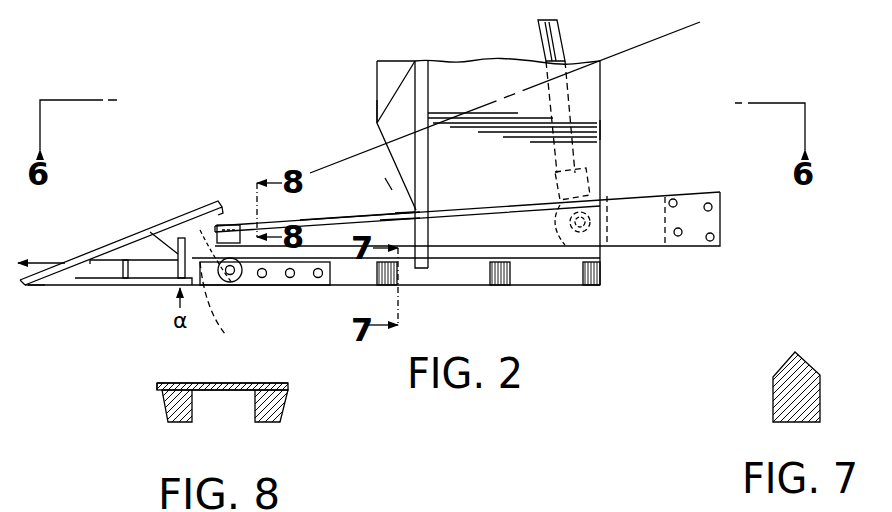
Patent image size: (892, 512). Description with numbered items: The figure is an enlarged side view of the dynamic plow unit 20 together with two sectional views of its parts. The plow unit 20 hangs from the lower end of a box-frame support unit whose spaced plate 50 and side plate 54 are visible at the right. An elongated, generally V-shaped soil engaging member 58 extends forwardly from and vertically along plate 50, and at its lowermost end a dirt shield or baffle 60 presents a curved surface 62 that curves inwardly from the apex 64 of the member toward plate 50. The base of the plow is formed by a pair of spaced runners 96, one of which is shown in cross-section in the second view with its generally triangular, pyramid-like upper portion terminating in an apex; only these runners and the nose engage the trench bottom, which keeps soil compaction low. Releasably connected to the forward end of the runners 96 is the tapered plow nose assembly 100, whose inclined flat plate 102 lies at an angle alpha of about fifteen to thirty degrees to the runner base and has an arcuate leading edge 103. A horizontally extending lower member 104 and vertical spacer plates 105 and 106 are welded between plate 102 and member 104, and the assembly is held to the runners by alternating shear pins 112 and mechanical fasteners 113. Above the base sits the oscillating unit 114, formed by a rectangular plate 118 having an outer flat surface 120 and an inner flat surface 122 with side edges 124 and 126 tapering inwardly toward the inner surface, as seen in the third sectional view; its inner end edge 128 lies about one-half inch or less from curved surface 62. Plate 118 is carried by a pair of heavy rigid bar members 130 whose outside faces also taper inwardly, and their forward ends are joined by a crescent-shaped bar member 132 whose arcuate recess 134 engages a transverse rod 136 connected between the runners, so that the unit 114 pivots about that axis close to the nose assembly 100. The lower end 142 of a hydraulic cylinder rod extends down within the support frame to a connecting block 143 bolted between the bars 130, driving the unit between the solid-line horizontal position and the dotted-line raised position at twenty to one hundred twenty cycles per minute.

In FIG. 2, the dynamic plow unit 20 is at (607, 138).
In FIG. 2, the plate 50 is at (417, 258).
In FIG. 2, the side plate 54 is at (592, 88).
In FIG. 2, the soil engaging member 58 is at (390, 73).
In FIG. 2, the dirt shield or baffle 60 is at (410, 173).
In FIG. 2, the curved surface 62 is at (398, 168).
In FIG. 2, the apex 64 is at (377, 101).
In FIG. 2, the runner 96 is at (583, 282).
In FIG. 7, the runner 96 is at (782, 398).
In FIG. 2, the plow nose assembly 100 is at (104, 238).
In FIG. 2, the inclined flat plate 102 is at (94, 260).
In FIG. 2, the leading edge 103 is at (30, 285).
In FIG. 2, the lower member 104 is at (127, 288).
In FIG. 2, the spacer plate 105 is at (118, 270).
In FIG. 2, the spacer plate 106 is at (162, 240).
In FIG. 2, the shear pin 112 is at (163, 230).
In FIG. 2, the mechanical fastener 113 is at (262, 278).
In FIG. 2, the oscillating unit 114 is at (383, 175).
In FIG. 2, the plate 118 is at (248, 215).
In FIG. 8, the plate 118 is at (208, 381).
In FIG. 2, the outer flat surface 120 is at (364, 210).
In FIG. 8, the outer flat surface 120 is at (260, 383).
In FIG. 2, the inner flat surface 122 is at (400, 222).
In FIG. 8, the inner flat surface 122 is at (217, 393).
In FIG. 8, the side edge 124 is at (288, 390).
In FIG. 8, the side edge 126 is at (157, 387).
In FIG. 2, the inner end edge 128 is at (408, 212).
In FIG. 2, the bar member 130 is at (712, 222).
In FIG. 8, the bar member 130 is at (165, 410).
In FIG. 2, the crescent-shaped bar member 132 is at (232, 304).
In FIG. 2, the arcuate recess 134 is at (240, 252).
In FIG. 2, the rod or bar 136 is at (232, 282).
In FIG. 2, the lower end of cylinder rod 142 is at (558, 42).
In FIG. 2, the connecting block 143 is at (607, 200).